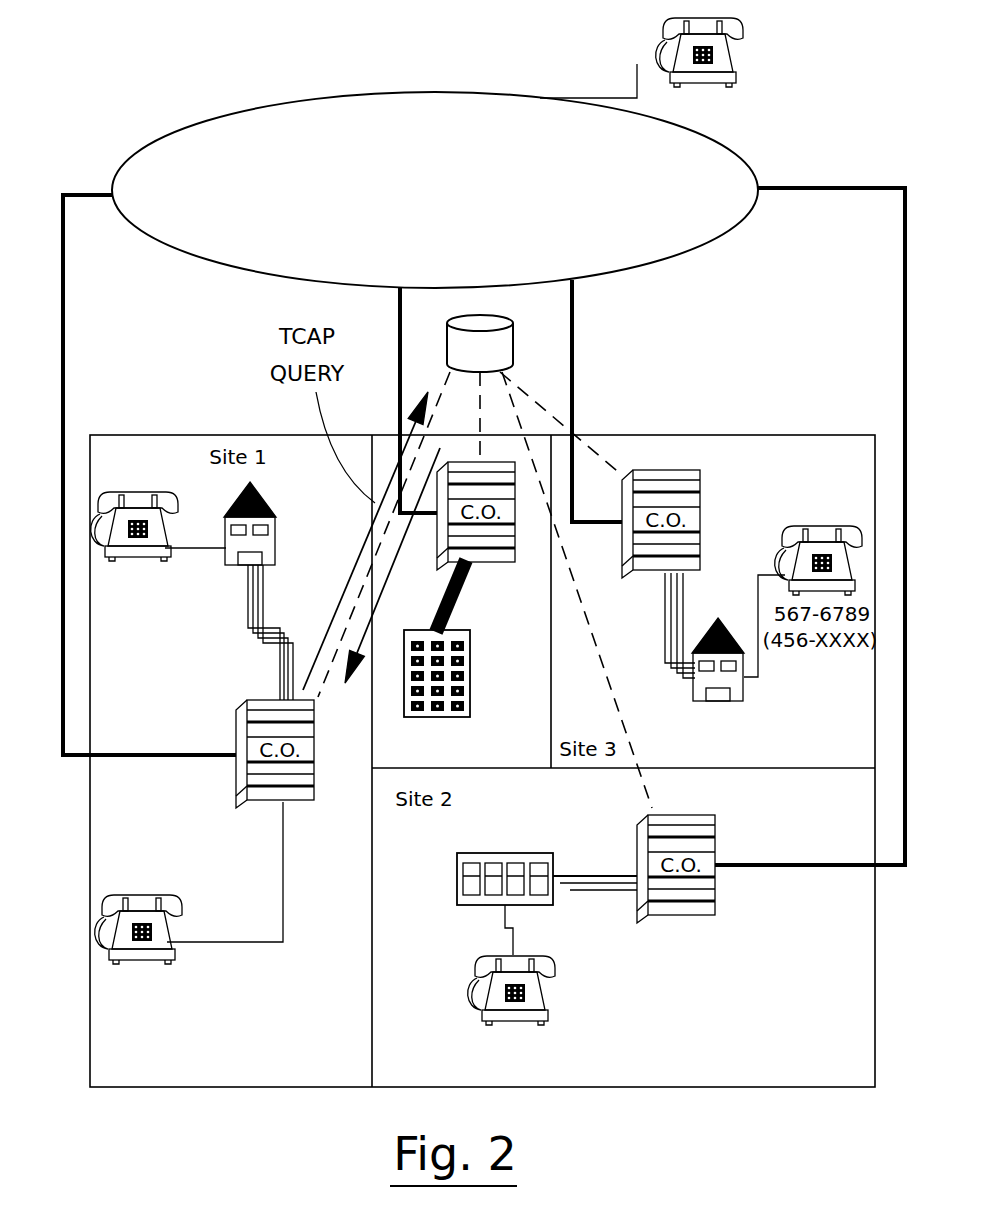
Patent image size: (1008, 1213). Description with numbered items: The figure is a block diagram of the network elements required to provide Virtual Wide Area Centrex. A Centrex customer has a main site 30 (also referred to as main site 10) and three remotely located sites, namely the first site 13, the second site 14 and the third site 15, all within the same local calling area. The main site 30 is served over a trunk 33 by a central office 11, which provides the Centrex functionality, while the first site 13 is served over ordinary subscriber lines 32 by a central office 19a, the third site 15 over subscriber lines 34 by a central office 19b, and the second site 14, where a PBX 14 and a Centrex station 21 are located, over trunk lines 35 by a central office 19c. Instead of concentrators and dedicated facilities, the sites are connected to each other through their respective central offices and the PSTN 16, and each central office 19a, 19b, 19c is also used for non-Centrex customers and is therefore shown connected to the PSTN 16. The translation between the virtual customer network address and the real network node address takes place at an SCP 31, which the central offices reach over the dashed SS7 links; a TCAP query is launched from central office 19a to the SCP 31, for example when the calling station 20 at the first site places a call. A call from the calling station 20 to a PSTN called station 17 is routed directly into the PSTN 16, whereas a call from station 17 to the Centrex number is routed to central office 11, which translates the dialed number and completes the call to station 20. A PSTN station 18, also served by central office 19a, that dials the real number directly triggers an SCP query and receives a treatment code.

The main site 10 is at (418, 628).
The central office 11 is at (515, 560).
The site 1 13 is at (275, 532).
The site 2 14 is at (455, 892).
The site 3 15 is at (744, 685).
The PSTN 16 is at (552, 197).
The called station 17 is at (665, 22).
The PSTN station 18 is at (140, 893).
The central office 19a is at (248, 805).
The central office 19b is at (700, 505).
The central office 19c is at (718, 912).
The calling station 20 is at (150, 490).
The Centrex station 21 is at (478, 968).
The main site 30 is at (513, 732).
The SCP 31 is at (480, 316).
The subscriber lines 32 is at (250, 602).
The trunk 33 is at (468, 600).
The subscriber lines 34 is at (662, 615).
The trunk lines 35 is at (605, 875).